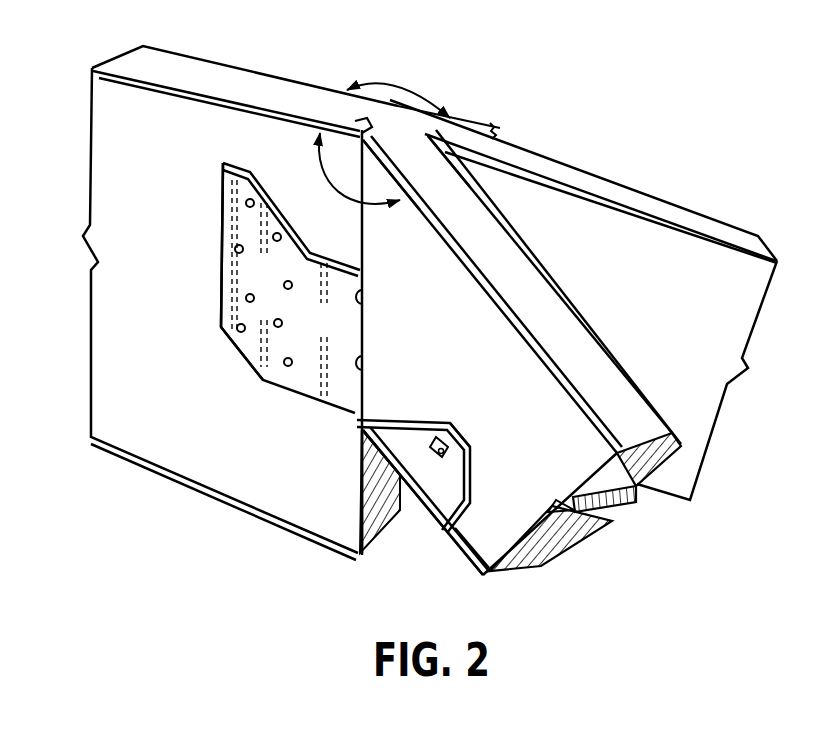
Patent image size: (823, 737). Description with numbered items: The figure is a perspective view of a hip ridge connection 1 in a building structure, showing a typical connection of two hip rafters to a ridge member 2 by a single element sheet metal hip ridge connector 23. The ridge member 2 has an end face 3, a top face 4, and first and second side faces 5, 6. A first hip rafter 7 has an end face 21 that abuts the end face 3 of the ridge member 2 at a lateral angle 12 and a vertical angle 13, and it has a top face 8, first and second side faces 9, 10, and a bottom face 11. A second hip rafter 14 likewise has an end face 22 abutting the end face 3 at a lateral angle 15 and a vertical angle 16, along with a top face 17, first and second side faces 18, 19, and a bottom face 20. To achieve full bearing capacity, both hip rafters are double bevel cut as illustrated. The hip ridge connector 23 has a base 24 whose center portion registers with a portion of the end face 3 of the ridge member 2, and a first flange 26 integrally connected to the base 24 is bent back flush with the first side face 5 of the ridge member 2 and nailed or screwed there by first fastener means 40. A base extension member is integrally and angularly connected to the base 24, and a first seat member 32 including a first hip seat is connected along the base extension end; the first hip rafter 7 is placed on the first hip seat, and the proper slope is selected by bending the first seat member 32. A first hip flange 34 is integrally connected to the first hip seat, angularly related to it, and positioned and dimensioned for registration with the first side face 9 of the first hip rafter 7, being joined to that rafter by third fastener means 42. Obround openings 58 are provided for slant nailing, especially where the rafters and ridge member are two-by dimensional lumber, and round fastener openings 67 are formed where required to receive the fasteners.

The hip ridge connection 1 is at (588, 90).
The ridge member 2 is at (200, 55).
The end face 3 is at (376, 516).
The top face 4 is at (219, 95).
The first side face 5 is at (140, 185).
The second side face 6 is at (302, 82).
The first hip rafter 7 is at (568, 290).
The top face 8 is at (605, 398).
The first side face 9 is at (561, 448).
The second side face 10 is at (628, 373).
The bottom face 11 is at (518, 566).
The lateral angle 12 is at (344, 180).
The vertical angle 13 is at (376, 466).
The second hip rafter 14 is at (601, 172).
The lateral angle 15 is at (408, 90).
The vertical angle 16 is at (497, 131).
The top face 17 is at (685, 218).
The first side face 18 is at (741, 307).
The second side face 19 is at (738, 229).
The bottom face 20 is at (664, 485).
The end face 21 is at (364, 137).
The end face 22 is at (441, 148).
The hip ridge connector 23 is at (212, 353).
The base 24 is at (218, 304).
The first flange 26 is at (282, 278).
The first seat member 32 is at (424, 522).
The first hip flange 34 is at (454, 495).
The first fastener means 40 is at (247, 206).
The third fastener means 42 is at (452, 432).
The obround opening 58 is at (433, 434).
The round fastener openings 67 is at (245, 327).